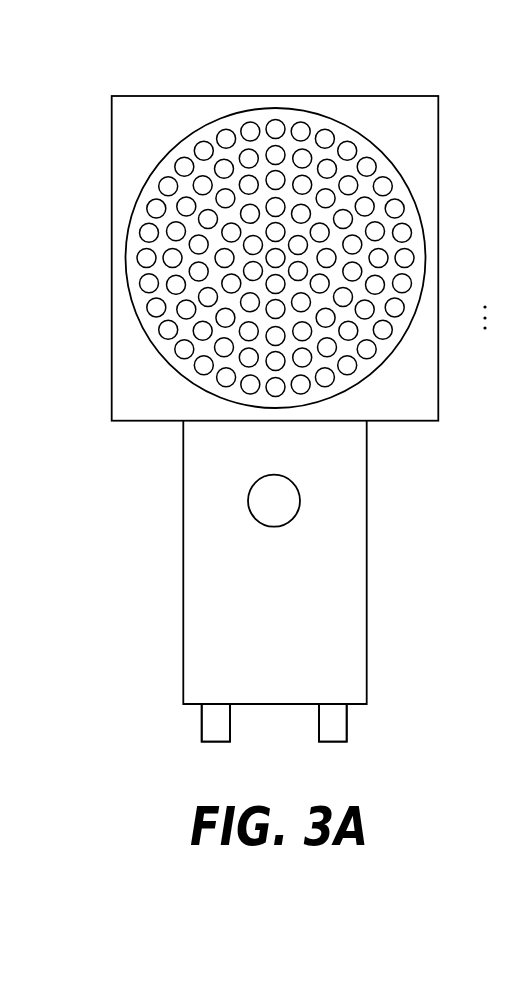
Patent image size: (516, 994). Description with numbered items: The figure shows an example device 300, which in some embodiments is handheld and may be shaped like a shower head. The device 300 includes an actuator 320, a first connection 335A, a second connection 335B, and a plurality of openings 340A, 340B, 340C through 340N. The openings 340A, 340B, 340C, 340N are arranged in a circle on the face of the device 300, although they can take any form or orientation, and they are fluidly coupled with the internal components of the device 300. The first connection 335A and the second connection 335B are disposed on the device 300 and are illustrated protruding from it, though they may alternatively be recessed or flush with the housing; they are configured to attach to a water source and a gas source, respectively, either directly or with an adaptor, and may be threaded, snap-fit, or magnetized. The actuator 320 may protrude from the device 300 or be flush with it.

The device 300 is at (103, 86).
The actuator 320 is at (293, 499).
The first connection 335A is at (205, 727).
The second connection 335B is at (343, 727).
The opening 340A is at (408, 230).
The opening 340B is at (403, 260).
The opening 340C is at (408, 281).
The opening 340N is at (375, 347).